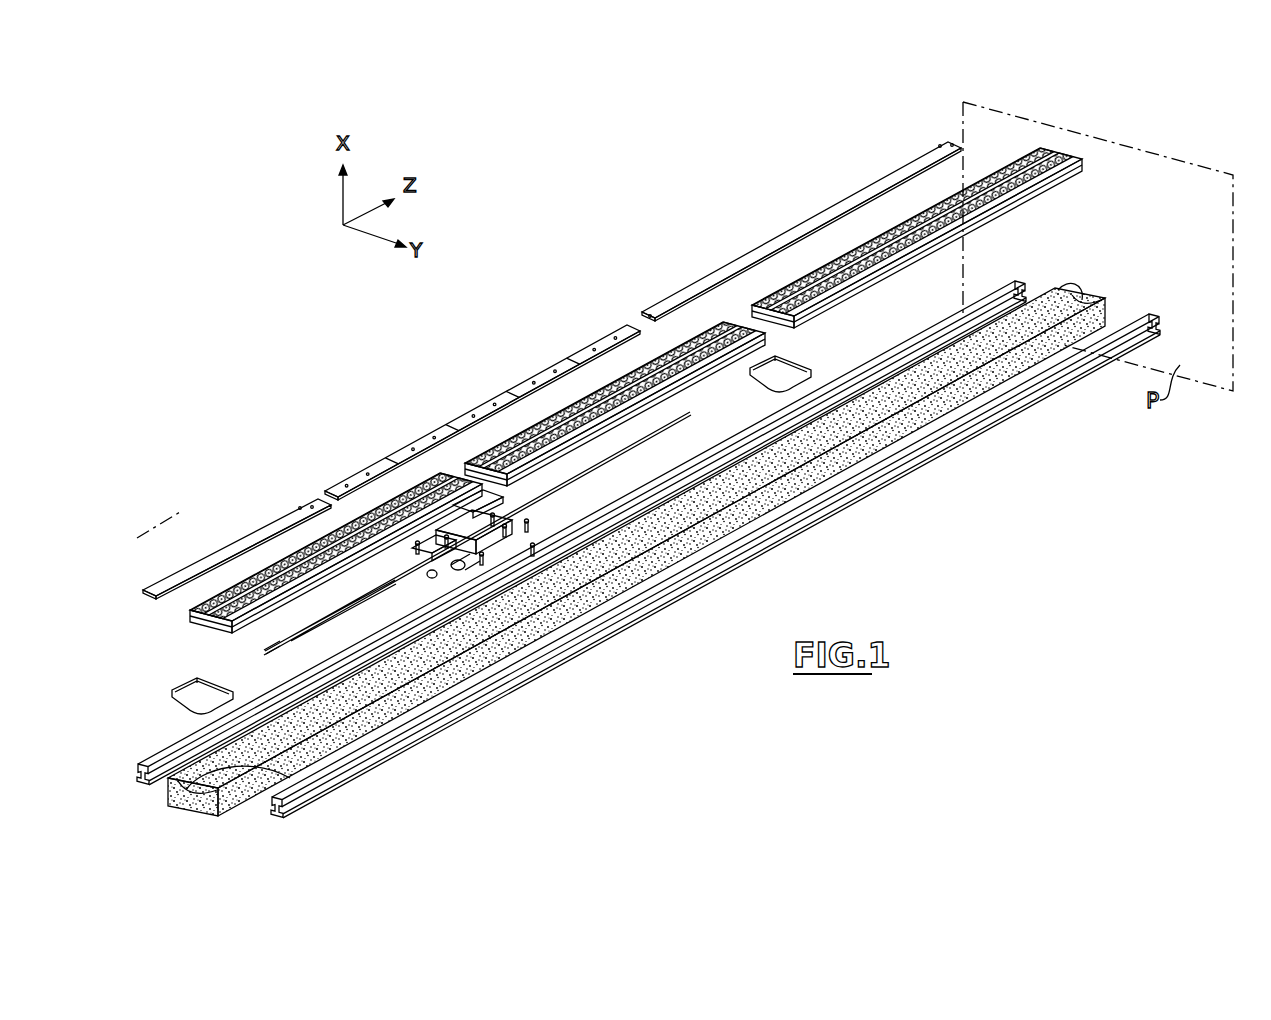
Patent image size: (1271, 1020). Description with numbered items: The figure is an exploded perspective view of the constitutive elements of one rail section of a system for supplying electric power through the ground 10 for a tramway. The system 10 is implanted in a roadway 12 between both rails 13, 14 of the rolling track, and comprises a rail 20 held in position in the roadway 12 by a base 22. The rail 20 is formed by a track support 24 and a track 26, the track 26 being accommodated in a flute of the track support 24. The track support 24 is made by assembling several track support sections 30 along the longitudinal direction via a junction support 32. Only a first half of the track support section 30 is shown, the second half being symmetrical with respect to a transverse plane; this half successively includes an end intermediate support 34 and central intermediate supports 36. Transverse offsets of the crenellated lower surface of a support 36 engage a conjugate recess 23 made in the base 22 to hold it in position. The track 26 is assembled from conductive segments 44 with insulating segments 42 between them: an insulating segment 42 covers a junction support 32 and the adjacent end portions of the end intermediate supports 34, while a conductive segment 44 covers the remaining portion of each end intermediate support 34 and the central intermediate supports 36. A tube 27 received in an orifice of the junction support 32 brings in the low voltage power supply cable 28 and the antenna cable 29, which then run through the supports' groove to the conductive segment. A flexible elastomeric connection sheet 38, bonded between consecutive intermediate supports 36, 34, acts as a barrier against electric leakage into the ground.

The system for supplying electric power through the ground 10 is at (529, 240).
The roadway 12 is at (540, 733).
The rail 13 is at (160, 762).
The rail 14 is at (373, 767).
The rail 20 is at (1143, 143).
The base 22 is at (1091, 281).
The conjugate recess 23 is at (295, 778).
The track support 24 is at (1080, 161).
The track 26 is at (978, 143).
The tube 27 is at (445, 570).
The low voltage power supply cable 28 is at (469, 546).
The antenna cable 29 is at (266, 652).
The track support section 30 is at (955, 85).
The junction support 32 is at (504, 494).
The end intermediate support 34 is at (683, 325).
The central intermediate support 36 is at (837, 239).
The connection sheet 38 is at (790, 378).
The insulating segment 42 is at (541, 378).
The conductive segment 44 is at (662, 302).